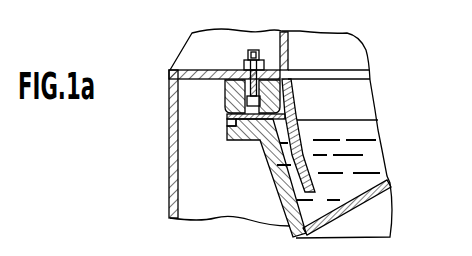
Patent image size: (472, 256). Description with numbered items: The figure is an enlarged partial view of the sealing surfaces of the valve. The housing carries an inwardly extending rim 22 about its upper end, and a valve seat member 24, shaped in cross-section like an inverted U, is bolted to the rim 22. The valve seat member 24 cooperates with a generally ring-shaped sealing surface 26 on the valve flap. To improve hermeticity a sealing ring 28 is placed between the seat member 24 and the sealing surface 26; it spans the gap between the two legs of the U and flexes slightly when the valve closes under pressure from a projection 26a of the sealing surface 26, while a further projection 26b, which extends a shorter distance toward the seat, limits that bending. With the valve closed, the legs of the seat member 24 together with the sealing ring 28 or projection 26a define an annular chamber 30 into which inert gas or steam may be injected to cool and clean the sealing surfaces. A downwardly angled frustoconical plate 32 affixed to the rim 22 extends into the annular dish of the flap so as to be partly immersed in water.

The rim 22 is at (225, 70).
The valve seat member 24 is at (224, 97).
The sealing surface 26 is at (250, 141).
The projection 26a is at (229, 140).
The further projection 26b is at (227, 128).
The sealing ring 28 is at (296, 114).
The annular chamber 30 is at (289, 77).
The frustoconical plate 32 is at (313, 160).